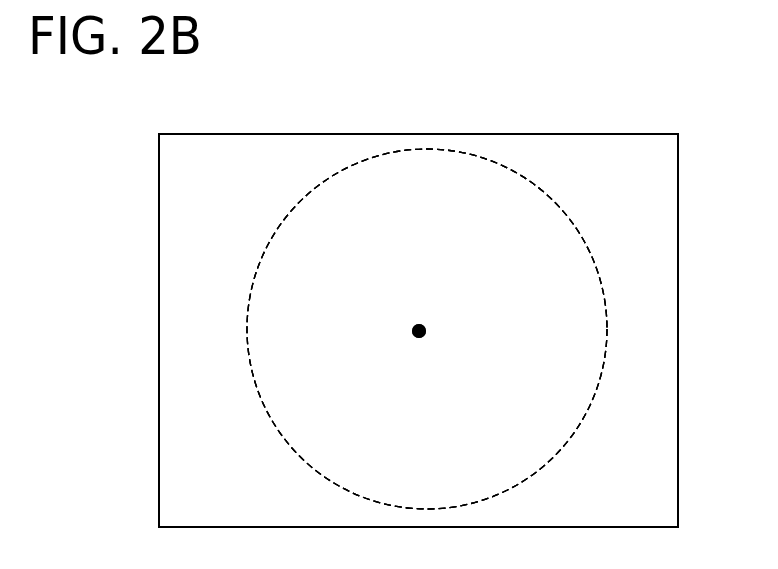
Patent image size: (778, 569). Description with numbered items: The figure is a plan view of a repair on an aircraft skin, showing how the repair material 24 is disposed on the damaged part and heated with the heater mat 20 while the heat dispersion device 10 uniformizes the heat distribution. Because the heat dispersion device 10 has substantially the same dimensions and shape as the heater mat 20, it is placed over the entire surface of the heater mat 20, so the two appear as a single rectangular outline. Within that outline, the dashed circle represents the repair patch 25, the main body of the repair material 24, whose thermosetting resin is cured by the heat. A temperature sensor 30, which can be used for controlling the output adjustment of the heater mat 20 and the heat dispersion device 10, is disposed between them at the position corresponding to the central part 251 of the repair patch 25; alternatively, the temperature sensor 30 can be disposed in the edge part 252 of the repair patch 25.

The heat dispersion device 10 is at (582, 134).
The heater mat 20 is at (418, 330).
The repair material 24 is at (376, 156).
The repair patch 25 is at (447, 178).
The edge part 252 is at (263, 256).
The central part 251 is at (408, 324).
The temperature sensor 30 is at (425, 326).